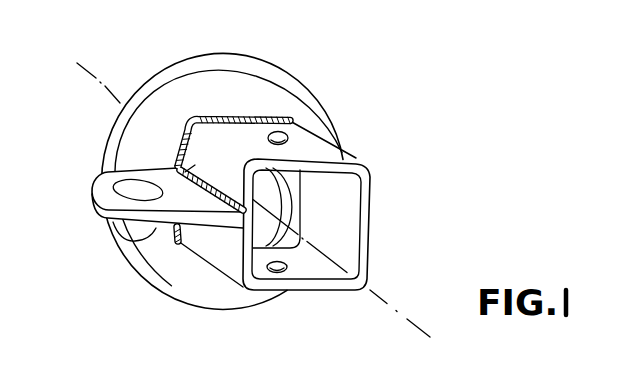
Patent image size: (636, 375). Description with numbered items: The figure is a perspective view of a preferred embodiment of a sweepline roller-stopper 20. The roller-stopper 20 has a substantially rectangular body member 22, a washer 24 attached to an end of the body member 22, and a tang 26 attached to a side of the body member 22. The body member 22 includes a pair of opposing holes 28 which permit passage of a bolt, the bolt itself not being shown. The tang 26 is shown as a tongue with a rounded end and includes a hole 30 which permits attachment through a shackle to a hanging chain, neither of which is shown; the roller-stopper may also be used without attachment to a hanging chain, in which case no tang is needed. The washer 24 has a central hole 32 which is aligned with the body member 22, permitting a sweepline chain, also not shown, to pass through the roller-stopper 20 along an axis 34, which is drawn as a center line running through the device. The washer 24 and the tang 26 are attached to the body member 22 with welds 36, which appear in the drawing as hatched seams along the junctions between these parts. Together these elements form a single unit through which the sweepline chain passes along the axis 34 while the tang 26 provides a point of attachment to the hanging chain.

The sweepline roller-stopper 20 is at (115, 60).
The body member 22 is at (350, 155).
The washer 24 is at (274, 62).
The tang 26 is at (115, 238).
The opposing holes 28 is at (283, 129).
The hole 30 is at (136, 191).
The central hole 32 is at (283, 200).
The axis 34 is at (373, 293).
The welds 36 is at (208, 125).